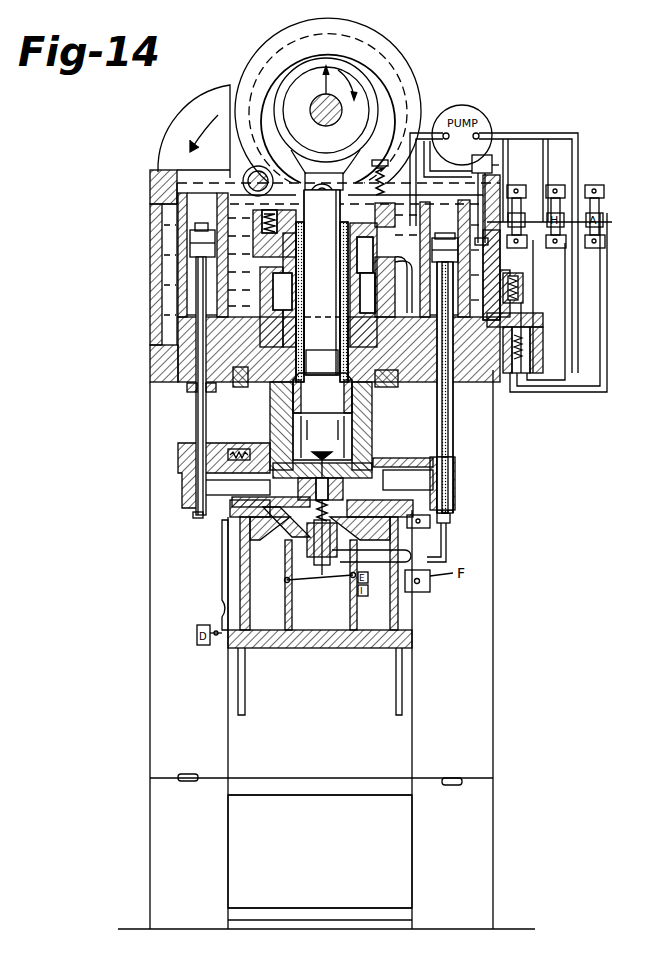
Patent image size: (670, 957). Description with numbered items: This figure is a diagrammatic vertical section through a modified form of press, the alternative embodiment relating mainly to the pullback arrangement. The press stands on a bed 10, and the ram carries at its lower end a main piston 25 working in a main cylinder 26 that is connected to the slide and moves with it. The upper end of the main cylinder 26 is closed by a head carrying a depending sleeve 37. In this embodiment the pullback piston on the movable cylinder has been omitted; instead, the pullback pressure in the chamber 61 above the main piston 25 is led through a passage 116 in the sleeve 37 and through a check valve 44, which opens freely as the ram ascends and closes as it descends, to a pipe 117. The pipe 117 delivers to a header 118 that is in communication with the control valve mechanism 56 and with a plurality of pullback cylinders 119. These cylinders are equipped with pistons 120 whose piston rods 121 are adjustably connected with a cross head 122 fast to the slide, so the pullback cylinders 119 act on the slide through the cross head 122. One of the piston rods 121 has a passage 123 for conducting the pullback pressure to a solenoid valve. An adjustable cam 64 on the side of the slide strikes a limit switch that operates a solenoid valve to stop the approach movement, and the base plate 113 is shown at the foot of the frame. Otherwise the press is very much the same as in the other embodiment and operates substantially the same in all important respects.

The bed 10 is at (372, 881).
The main piston 25 is at (330, 400).
The main cylinder 26 is at (370, 420).
The depending sleeve 37 is at (298, 292).
The check valve 44 is at (348, 232).
The control valve mechanism 56 is at (526, 318).
The chamber 61 is at (322, 361).
The adjustable cam 64 is at (222, 588).
The base plate 113 is at (325, 650).
The passage 116 is at (350, 258).
The pipe 117 is at (408, 296).
The header 118 is at (478, 295).
The pullback cylinders 119 is at (202, 210).
The pistons 120 is at (190, 244).
The piston rods 121 is at (198, 416).
The cross head 122 is at (455, 478).
The passage 123 is at (446, 416).